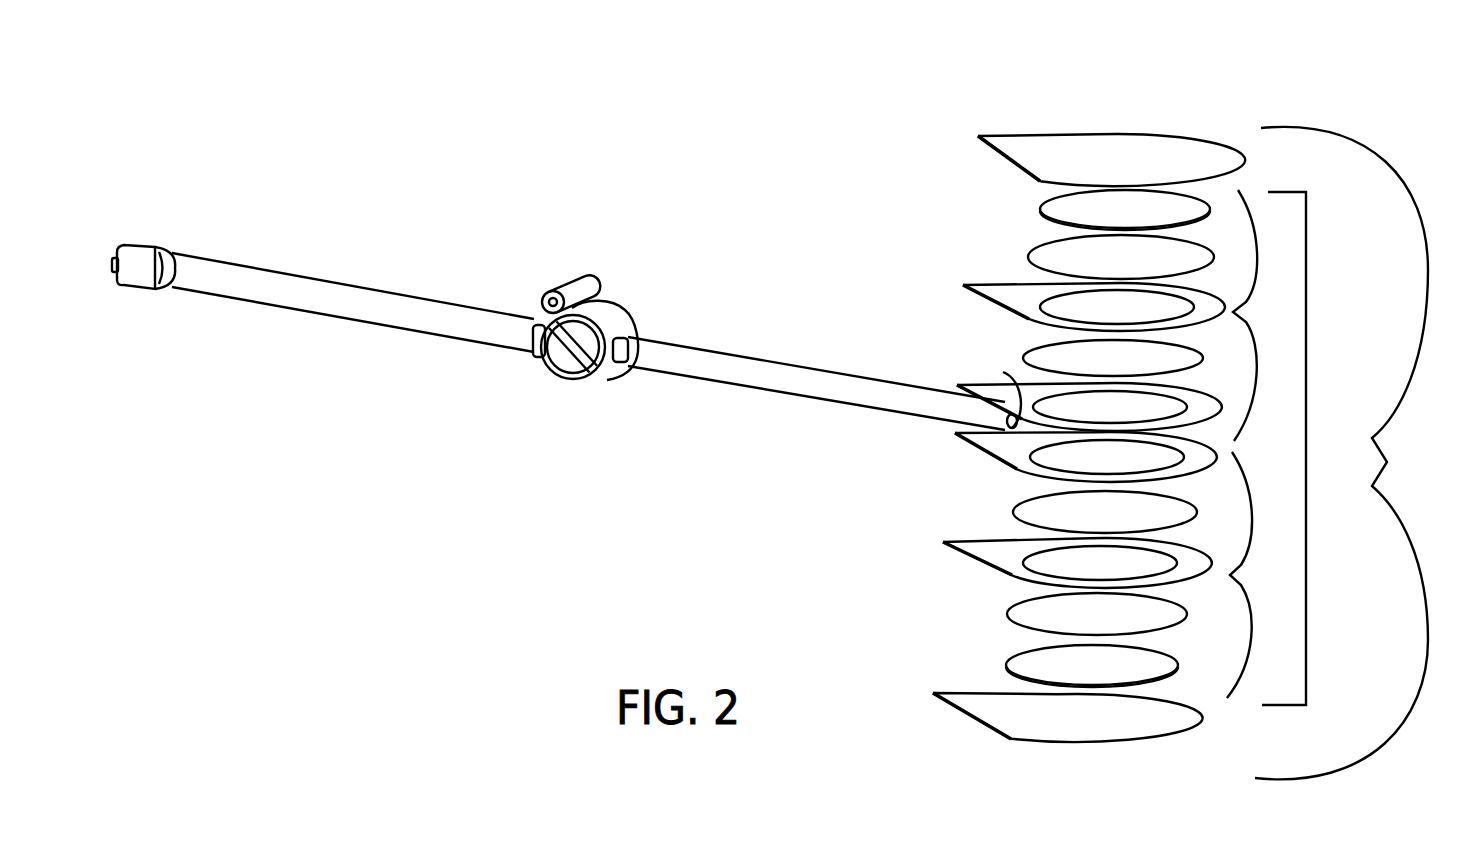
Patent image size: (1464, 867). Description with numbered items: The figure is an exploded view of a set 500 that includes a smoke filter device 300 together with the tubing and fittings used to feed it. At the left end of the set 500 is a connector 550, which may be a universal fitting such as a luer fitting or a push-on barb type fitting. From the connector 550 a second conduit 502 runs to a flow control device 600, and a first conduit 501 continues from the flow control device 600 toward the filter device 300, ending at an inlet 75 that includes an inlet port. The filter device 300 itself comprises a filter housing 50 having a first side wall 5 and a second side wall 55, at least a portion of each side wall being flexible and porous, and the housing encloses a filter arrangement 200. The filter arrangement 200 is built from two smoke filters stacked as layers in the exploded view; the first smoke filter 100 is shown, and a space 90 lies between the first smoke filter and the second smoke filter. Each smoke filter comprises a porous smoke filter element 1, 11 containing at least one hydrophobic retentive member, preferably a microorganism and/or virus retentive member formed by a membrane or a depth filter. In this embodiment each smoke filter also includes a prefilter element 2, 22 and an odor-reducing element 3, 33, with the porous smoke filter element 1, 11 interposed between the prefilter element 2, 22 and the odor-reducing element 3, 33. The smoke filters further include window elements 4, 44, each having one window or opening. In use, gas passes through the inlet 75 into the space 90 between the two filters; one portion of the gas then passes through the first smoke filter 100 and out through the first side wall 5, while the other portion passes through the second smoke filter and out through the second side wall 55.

The set 500 is at (330, 87).
The connector 550 is at (145, 254).
The second conduit 502 is at (413, 323).
The flow control device 600 is at (563, 362).
The first conduit 501 is at (762, 382).
The inlet 75 is at (1005, 372).
The space 90 is at (1018, 428).
The second side wall 55 is at (1113, 138).
The filter housing 50 is at (982, 134).
The odor-reducing element 33 is at (1048, 203).
The porous smoke filter element 11 is at (1042, 251).
The window element 44 is at (998, 293).
The prefilter element 22 is at (1047, 354).
The window element 4 is at (957, 435).
The prefilter element 2 is at (1024, 508).
The porous smoke filter element 1 is at (1030, 613).
The odor-reducing element 3 is at (1025, 660).
The first side wall 5 is at (1045, 722).
The first smoke filter 100 is at (1261, 444).
The filter arrangement 200 is at (1314, 448).
The smoke filter device 300 is at (1351, 453).